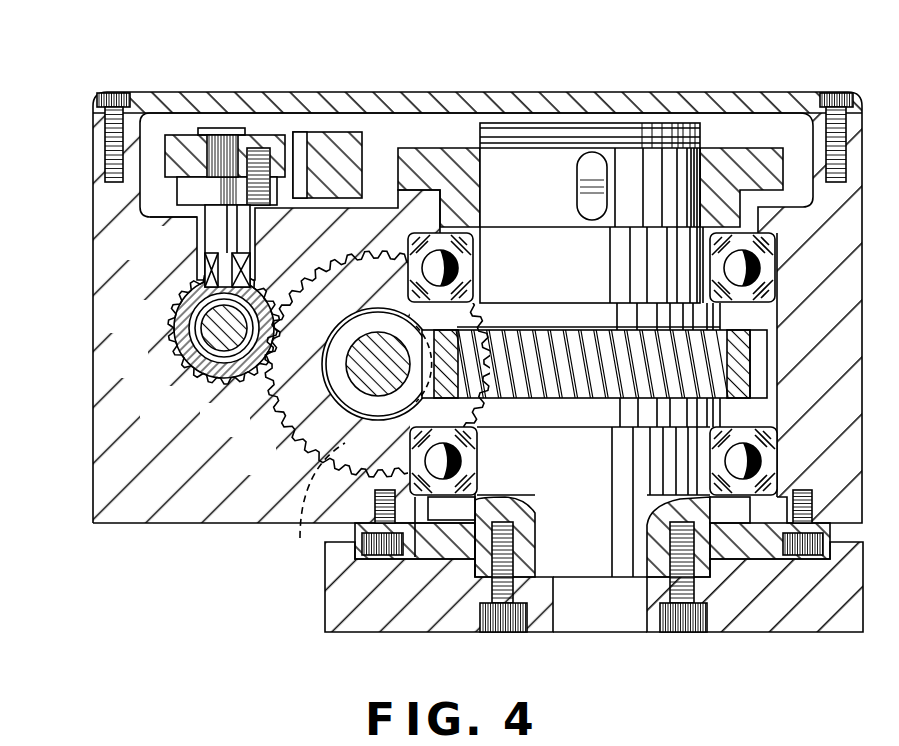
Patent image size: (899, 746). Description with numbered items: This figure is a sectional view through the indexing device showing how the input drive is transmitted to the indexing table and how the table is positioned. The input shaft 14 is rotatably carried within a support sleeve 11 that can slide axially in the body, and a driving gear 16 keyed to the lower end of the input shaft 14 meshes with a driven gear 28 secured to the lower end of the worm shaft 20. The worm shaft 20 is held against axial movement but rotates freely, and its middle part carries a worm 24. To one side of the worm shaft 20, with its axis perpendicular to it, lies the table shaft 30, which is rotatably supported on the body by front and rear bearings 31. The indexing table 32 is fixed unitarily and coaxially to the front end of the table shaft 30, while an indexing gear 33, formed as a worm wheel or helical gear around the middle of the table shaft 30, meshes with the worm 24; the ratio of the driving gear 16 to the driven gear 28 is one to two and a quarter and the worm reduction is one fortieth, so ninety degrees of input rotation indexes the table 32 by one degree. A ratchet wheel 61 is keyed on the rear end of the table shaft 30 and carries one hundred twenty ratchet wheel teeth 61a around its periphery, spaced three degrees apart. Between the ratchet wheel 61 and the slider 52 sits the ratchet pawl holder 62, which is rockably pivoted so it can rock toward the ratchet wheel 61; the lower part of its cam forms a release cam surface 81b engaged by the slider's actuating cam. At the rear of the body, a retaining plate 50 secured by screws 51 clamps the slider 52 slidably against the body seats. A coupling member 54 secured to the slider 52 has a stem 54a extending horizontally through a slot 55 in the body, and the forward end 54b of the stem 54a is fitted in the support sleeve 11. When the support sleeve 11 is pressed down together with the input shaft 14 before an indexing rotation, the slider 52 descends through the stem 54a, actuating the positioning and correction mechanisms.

The support sleeve 11 is at (192, 358).
The input shaft 14 is at (214, 342).
The driving gear 16 is at (172, 315).
The worm shaft 20 is at (350, 368).
The worm 24 is at (330, 409).
The driven gear 28 is at (300, 539).
The table shaft 30 is at (592, 567).
The bearings 31 is at (728, 232).
The indexing table 32 is at (805, 620).
The indexing gear 33 is at (415, 505).
The retaining plate 50 is at (178, 135).
The screws 51 is at (223, 135).
The slider 52 is at (166, 163).
The coupling member 54 is at (258, 148).
The stem 54a is at (210, 240).
The forward end 54b is at (205, 268).
The slot 55 is at (178, 212).
The ratchet wheel 61 is at (452, 142).
The ratchet wheel teeth 61a is at (423, 152).
The ratchet pawl holder 62 is at (356, 132).
The release cam surface 81b is at (298, 132).